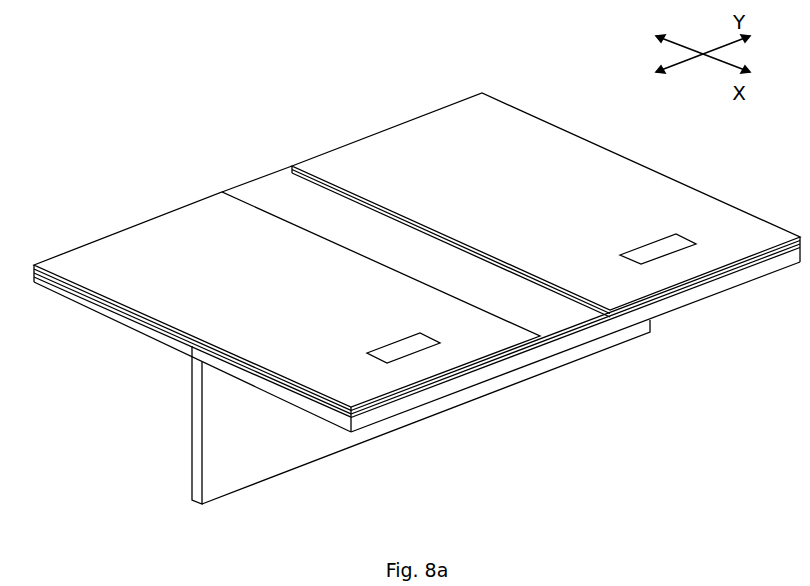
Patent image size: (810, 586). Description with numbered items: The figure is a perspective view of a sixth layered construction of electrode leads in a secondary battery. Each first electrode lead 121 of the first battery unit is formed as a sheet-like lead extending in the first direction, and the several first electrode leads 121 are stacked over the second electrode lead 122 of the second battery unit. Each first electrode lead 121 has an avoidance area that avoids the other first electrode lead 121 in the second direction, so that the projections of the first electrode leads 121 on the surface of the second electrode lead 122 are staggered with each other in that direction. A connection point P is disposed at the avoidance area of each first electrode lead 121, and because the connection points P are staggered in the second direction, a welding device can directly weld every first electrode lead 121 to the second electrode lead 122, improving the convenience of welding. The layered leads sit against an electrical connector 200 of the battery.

The first electrode lead 121 is at (508, 133).
The second electrode lead 122 is at (167, 332).
The electrical connector 200 is at (247, 422).
The connection point P is at (402, 348).